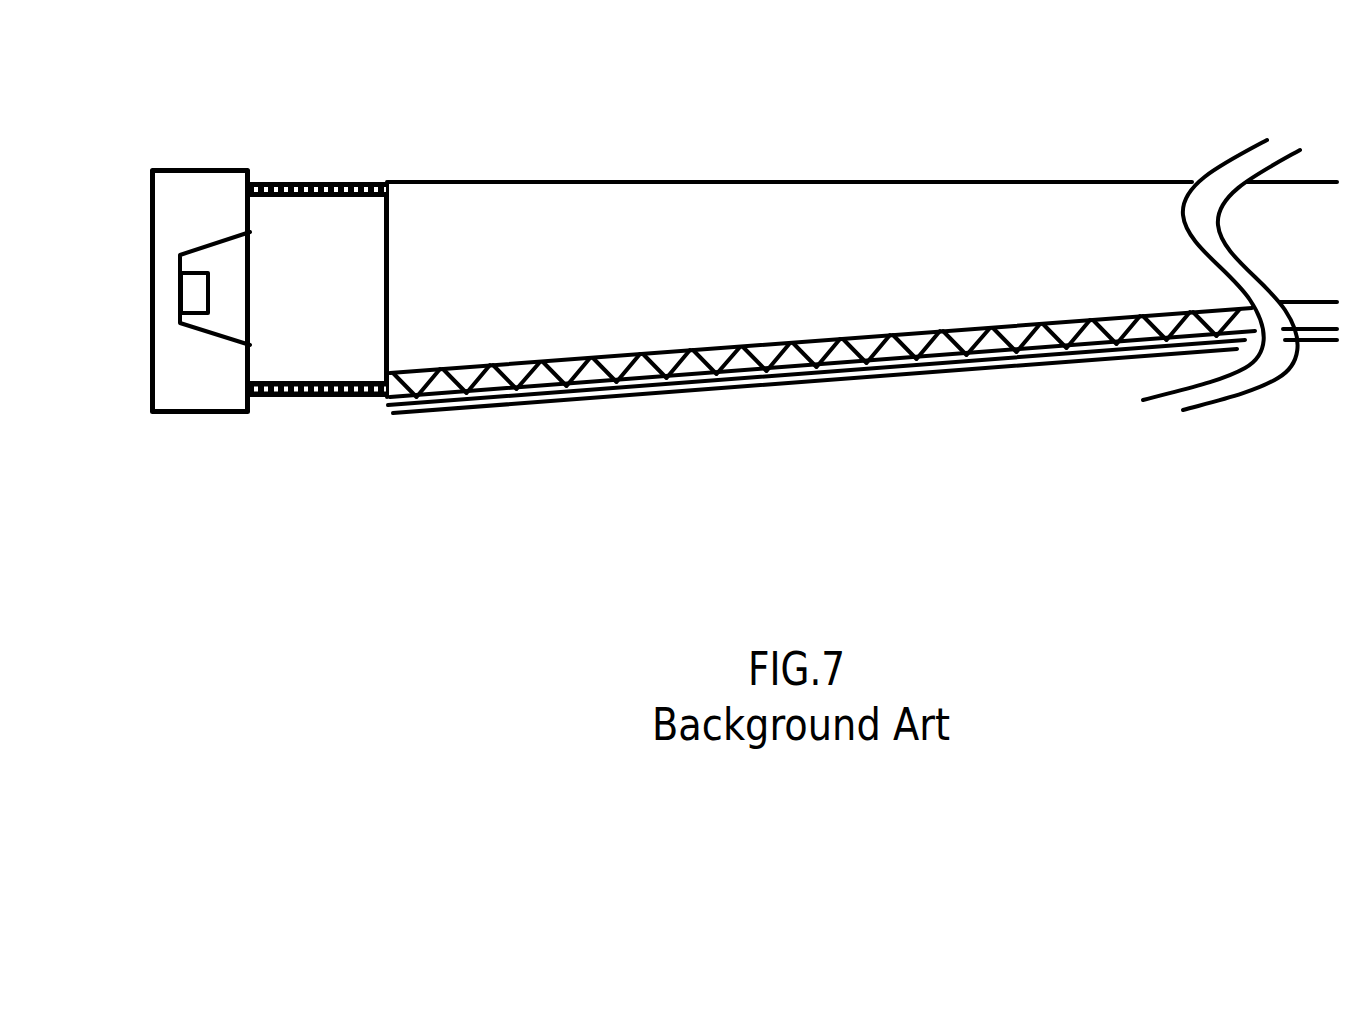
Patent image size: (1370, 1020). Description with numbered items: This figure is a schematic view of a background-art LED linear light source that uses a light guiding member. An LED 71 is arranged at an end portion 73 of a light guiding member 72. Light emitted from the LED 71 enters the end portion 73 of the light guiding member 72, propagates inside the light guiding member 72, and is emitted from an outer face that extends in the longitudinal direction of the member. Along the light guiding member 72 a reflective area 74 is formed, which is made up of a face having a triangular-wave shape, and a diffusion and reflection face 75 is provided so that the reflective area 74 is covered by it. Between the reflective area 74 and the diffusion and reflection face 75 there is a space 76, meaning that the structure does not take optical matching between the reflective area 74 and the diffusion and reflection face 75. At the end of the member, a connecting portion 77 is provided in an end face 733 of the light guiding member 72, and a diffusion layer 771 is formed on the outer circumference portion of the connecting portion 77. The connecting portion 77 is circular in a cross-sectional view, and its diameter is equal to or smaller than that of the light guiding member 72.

The LED 71 is at (215, 336).
The light guiding member 72 is at (950, 160).
The end portion 73 is at (390, 295).
The end face 733 is at (390, 226).
The reflective area 74 is at (1005, 345).
The diffusion and reflection face 75 is at (693, 393).
The space 76 is at (862, 355).
The connecting portion 77 is at (307, 398).
The diffusion layer 771 is at (290, 177).